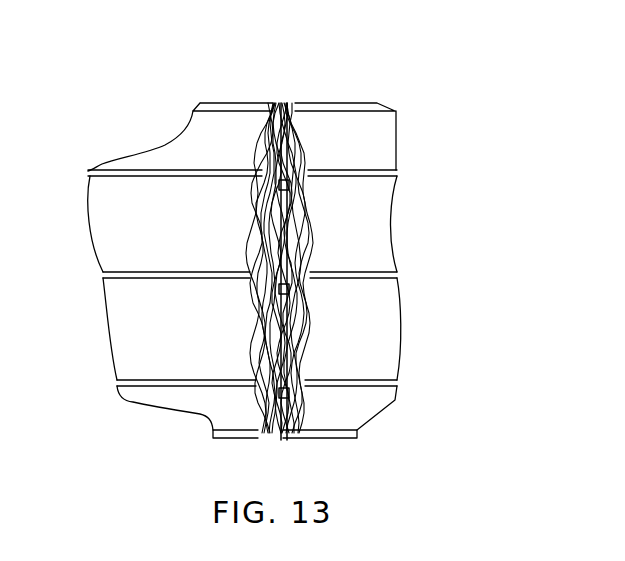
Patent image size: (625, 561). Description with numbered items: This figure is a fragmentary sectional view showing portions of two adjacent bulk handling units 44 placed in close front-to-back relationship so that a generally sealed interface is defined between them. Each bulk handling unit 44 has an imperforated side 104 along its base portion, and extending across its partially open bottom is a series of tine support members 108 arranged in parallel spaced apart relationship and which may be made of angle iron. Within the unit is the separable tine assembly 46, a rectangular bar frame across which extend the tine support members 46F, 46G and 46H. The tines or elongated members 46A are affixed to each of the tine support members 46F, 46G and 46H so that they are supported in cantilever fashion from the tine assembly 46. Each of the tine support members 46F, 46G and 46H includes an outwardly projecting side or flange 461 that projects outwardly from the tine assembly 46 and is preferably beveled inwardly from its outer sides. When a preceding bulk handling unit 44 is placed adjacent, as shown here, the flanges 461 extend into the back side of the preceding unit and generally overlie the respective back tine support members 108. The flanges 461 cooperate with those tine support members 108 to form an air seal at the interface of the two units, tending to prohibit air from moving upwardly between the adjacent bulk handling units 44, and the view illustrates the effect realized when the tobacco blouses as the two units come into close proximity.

The bulk handling unit 44 is at (199, 80).
The separable tine assembly 46 is at (282, 236).
The imperforated side 104 is at (196, 130).
The outwardly projecting side or flange 461 is at (292, 167).
The tine support member 46F is at (288, 167).
The tine support member 46G is at (300, 262).
The tine support member 46H is at (300, 378).
The tines or elongated members 46A is at (120, 183).
The tine support member 108 is at (283, 185).